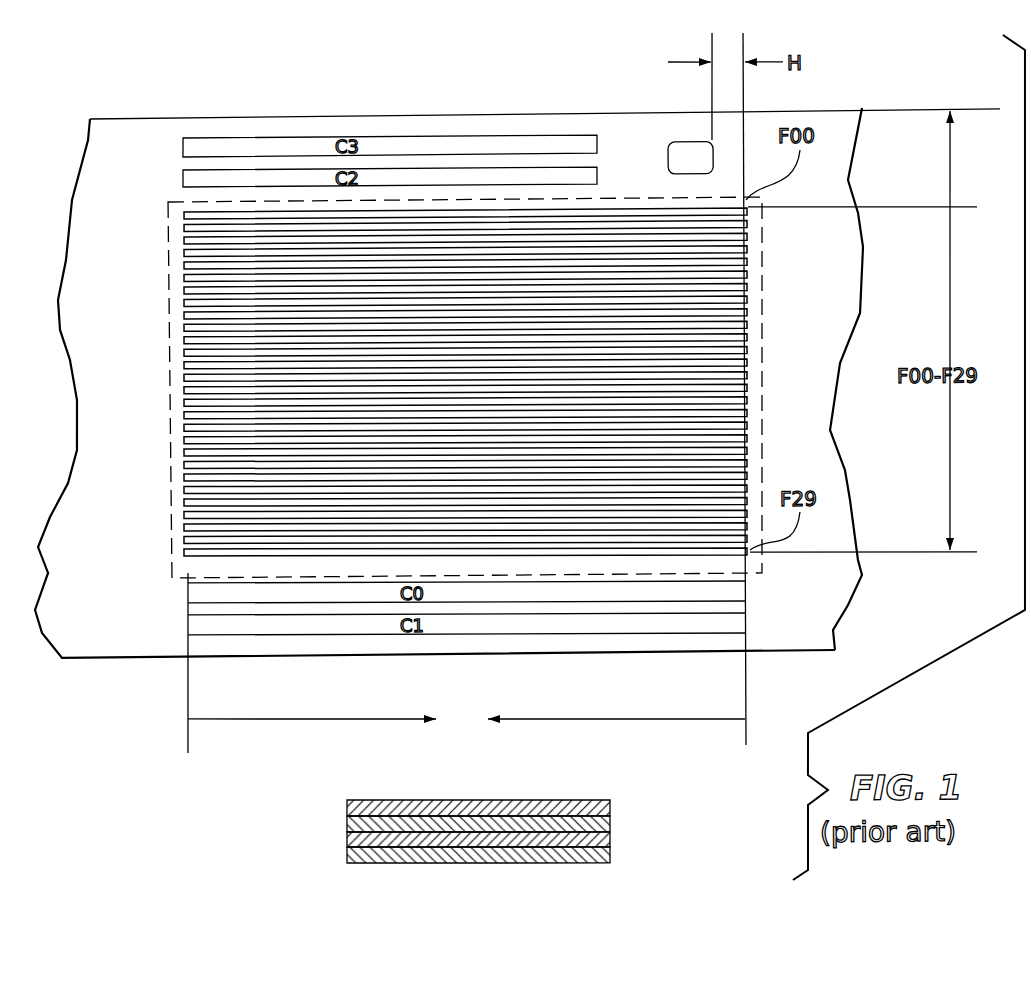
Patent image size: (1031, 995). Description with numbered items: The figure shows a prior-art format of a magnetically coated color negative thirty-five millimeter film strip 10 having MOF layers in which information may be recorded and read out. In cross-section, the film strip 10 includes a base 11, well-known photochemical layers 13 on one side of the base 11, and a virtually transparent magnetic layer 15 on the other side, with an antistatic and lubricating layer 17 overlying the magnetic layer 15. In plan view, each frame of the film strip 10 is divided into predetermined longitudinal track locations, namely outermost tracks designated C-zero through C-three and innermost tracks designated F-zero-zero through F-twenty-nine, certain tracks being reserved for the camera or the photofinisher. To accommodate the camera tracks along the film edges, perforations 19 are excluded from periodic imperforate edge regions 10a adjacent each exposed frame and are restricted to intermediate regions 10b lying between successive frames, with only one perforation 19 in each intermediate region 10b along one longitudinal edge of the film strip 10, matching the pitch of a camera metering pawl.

The film strip 10 is at (864, 111).
The imperforate edge region 10a is at (466, 661).
The intermediate region 10b is at (624, 134).
The base 11 is at (608, 841).
The photochemical layers 13 is at (607, 856).
The magnetic layer 15 is at (608, 826).
The antistatic and lubricating layer 17 is at (608, 809).
The perforation 19 is at (684, 144).